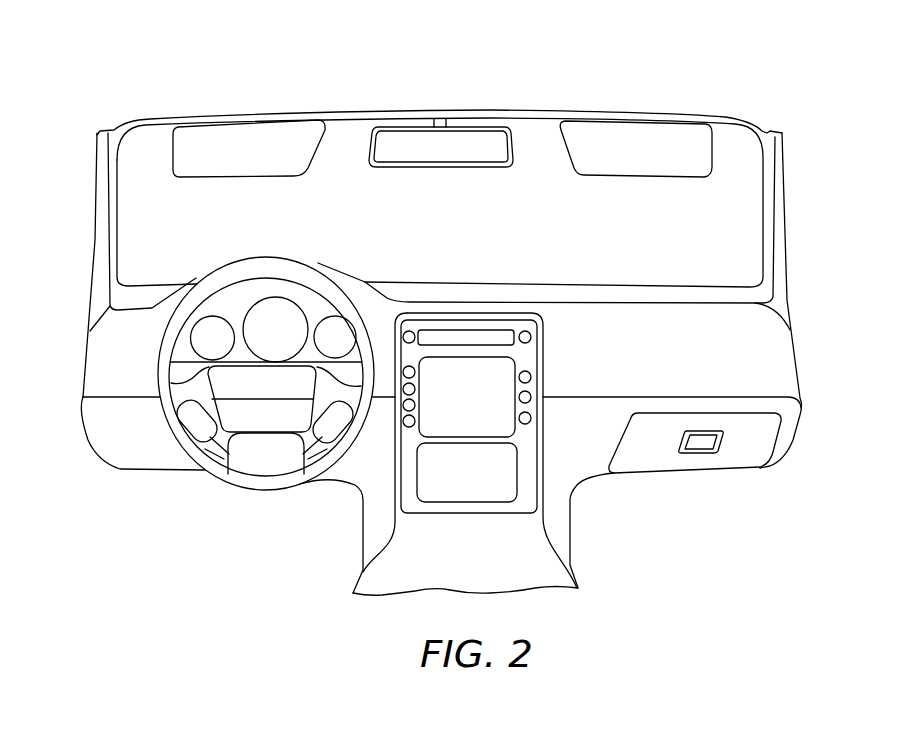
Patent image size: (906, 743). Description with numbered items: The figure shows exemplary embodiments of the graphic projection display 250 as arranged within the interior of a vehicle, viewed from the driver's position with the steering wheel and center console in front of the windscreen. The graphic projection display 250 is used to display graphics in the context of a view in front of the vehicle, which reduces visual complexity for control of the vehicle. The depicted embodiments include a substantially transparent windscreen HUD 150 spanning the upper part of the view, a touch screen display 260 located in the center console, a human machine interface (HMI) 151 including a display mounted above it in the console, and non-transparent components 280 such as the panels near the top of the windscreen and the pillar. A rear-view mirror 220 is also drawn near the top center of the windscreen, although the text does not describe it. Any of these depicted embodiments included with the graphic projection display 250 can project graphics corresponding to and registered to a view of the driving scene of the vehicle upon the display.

The graphic projection display 250 is at (152, 113).
The substantially transparent windscreen HUD 150 is at (159, 176).
The non-transparent components 280 is at (265, 156).
The rear view mirror 220 is at (459, 156).
The human machine interface (HMI) 151 is at (514, 368).
The touch screen display 260 is at (518, 457).